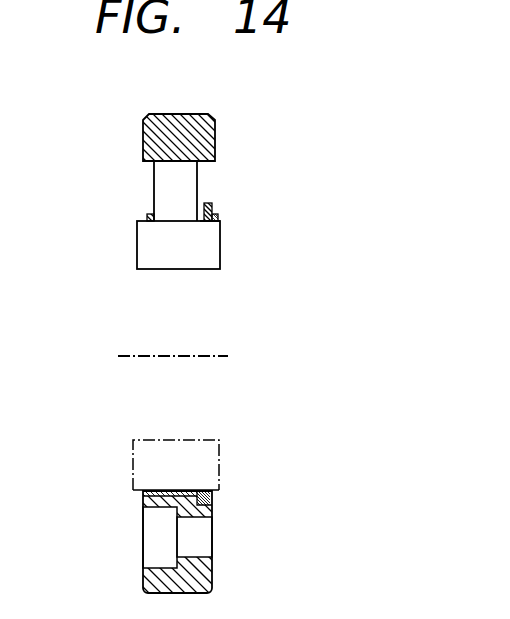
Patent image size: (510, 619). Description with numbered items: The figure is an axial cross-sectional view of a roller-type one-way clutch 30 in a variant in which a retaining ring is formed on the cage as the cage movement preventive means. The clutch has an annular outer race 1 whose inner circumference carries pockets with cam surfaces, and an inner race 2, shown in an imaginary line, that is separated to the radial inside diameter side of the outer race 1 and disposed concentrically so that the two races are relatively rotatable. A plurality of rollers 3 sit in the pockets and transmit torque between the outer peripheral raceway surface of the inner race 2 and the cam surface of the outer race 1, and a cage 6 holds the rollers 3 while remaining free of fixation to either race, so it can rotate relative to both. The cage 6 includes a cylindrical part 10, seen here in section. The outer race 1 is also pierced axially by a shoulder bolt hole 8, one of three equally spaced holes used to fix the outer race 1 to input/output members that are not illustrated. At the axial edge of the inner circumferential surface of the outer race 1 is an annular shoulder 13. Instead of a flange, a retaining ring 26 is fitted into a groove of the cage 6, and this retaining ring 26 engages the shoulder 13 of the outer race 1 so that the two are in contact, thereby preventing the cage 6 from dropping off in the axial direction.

The roller-type one-way clutch 30 is at (233, 133).
The outer race 1 is at (160, 123).
The rollers 3 is at (160, 183).
The inner race 2 is at (143, 252).
The cage 6 is at (146, 217).
The retaining ring 26 is at (212, 205).
The cylindrical part 10 is at (210, 222).
The shoulder bolt hole 8 is at (159, 568).
The shoulder 13 is at (212, 520).